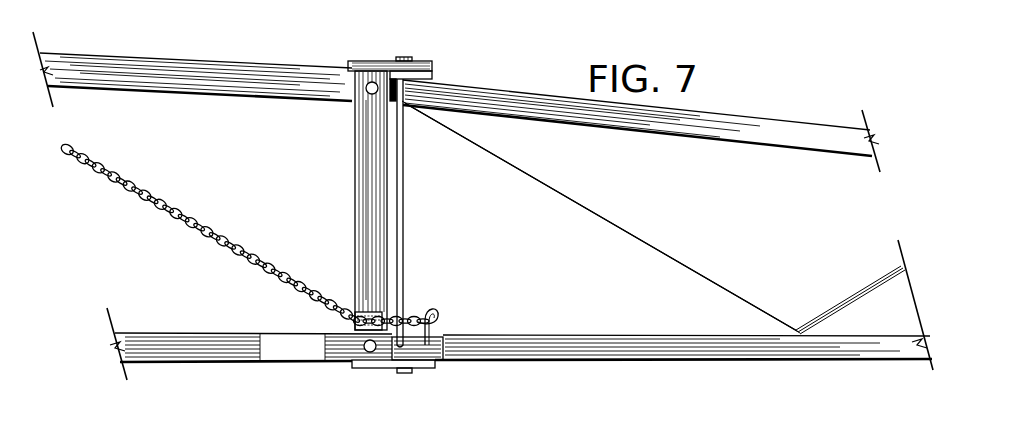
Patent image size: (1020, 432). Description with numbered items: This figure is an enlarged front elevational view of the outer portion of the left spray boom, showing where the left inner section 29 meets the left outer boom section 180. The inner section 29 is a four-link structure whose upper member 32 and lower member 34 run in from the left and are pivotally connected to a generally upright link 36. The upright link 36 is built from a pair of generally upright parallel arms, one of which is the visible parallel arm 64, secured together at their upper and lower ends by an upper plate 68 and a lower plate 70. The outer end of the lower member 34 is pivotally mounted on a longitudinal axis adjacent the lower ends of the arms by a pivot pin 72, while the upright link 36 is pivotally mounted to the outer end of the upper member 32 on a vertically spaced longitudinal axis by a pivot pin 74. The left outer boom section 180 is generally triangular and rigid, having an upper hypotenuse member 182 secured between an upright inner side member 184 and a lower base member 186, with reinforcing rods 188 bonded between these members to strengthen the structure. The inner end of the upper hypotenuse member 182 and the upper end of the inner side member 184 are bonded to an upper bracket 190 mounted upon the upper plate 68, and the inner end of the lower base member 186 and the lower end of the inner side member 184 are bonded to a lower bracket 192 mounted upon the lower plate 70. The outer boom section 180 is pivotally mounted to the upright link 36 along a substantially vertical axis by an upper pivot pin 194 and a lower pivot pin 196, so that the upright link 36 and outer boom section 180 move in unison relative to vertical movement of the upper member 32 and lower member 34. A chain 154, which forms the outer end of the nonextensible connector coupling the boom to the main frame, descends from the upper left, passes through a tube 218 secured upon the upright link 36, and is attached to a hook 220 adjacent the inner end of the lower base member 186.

The left inner section 29 is at (128, 46).
The upper member 32 is at (241, 68).
The lower member 34 is at (220, 350).
The upright link 36 is at (342, 200).
The parallel arm 64 is at (370, 240).
The upper plate 68 is at (387, 70).
The lower plate 70 is at (375, 368).
The pivot pin 72 is at (366, 350).
The pivot pin 74 is at (372, 94).
The chain 154 is at (155, 210).
The left outer boom section 180 is at (808, 92).
The upper hypotenuse member 182 is at (700, 128).
The upright inner side member 184 is at (418, 193).
The lower base member 186 is at (745, 360).
The reinforcing rods 188 is at (598, 217).
The upper bracket 190 is at (428, 80).
The lower bracket 192 is at (440, 335).
The upper pivot pin 194 is at (398, 57).
The lower pivot pin 196 is at (410, 373).
The tube 218 is at (367, 313).
The hook 220 is at (430, 303).